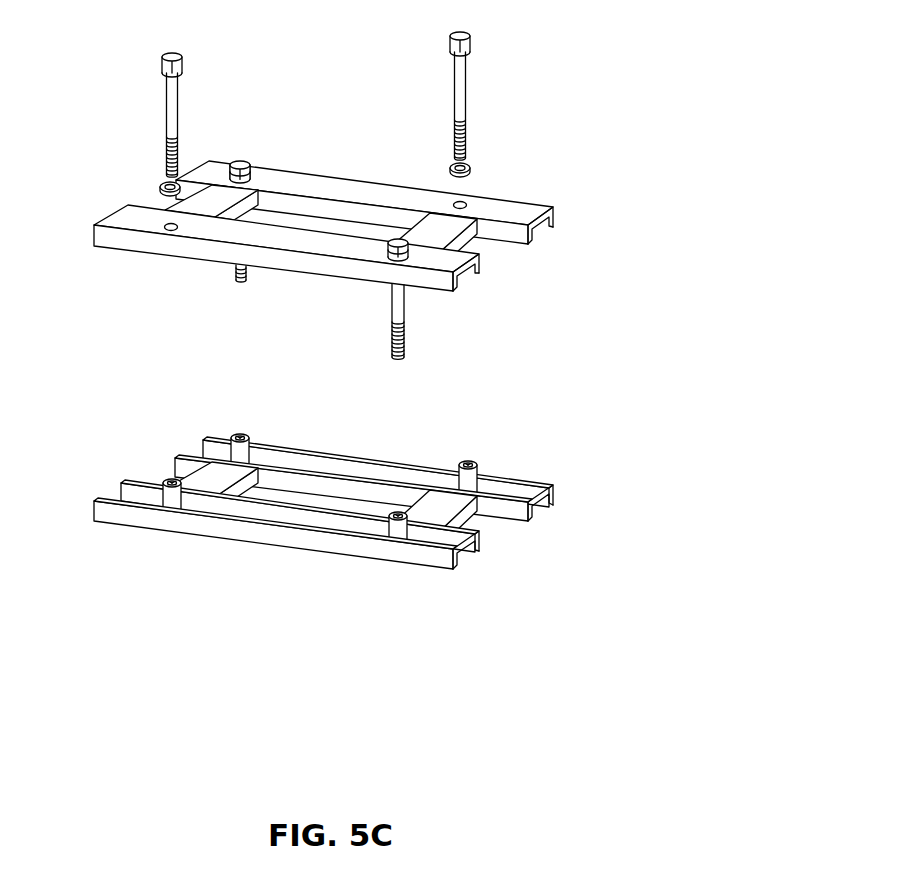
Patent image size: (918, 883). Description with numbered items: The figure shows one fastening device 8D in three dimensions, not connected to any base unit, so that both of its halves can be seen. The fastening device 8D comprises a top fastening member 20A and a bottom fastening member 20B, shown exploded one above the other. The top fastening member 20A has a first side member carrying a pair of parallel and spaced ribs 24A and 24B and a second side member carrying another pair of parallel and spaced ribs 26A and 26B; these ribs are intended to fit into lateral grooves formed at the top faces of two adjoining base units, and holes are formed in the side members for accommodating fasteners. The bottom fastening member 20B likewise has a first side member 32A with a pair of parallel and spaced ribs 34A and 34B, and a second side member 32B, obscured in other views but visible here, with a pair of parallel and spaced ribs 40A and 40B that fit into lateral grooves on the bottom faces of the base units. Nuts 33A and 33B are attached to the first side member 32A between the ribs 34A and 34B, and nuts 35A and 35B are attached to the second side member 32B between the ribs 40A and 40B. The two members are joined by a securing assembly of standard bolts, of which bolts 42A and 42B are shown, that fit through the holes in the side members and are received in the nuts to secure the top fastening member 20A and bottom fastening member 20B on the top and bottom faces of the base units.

The top fastening member 20A is at (316, 70).
The bottom fastening member 20B is at (215, 368).
The fastening device 8D is at (500, 88).
The bolt 42A is at (163, 130).
The bolt 42B is at (391, 330).
The rib 24A is at (416, 215).
The rib 24B is at (530, 246).
The rib 26A is at (375, 279).
The rib 26B is at (456, 282).
The first side member 32A is at (256, 514).
The second side member 32B is at (364, 451).
The nut 33A is at (165, 481).
The nut 33B is at (364, 532).
The nut 35A is at (246, 430).
The nut 35B is at (476, 462).
The rib 34A is at (345, 514).
The rib 34B is at (345, 514).
The rib 40A is at (416, 451).
The rib 40B is at (416, 451).